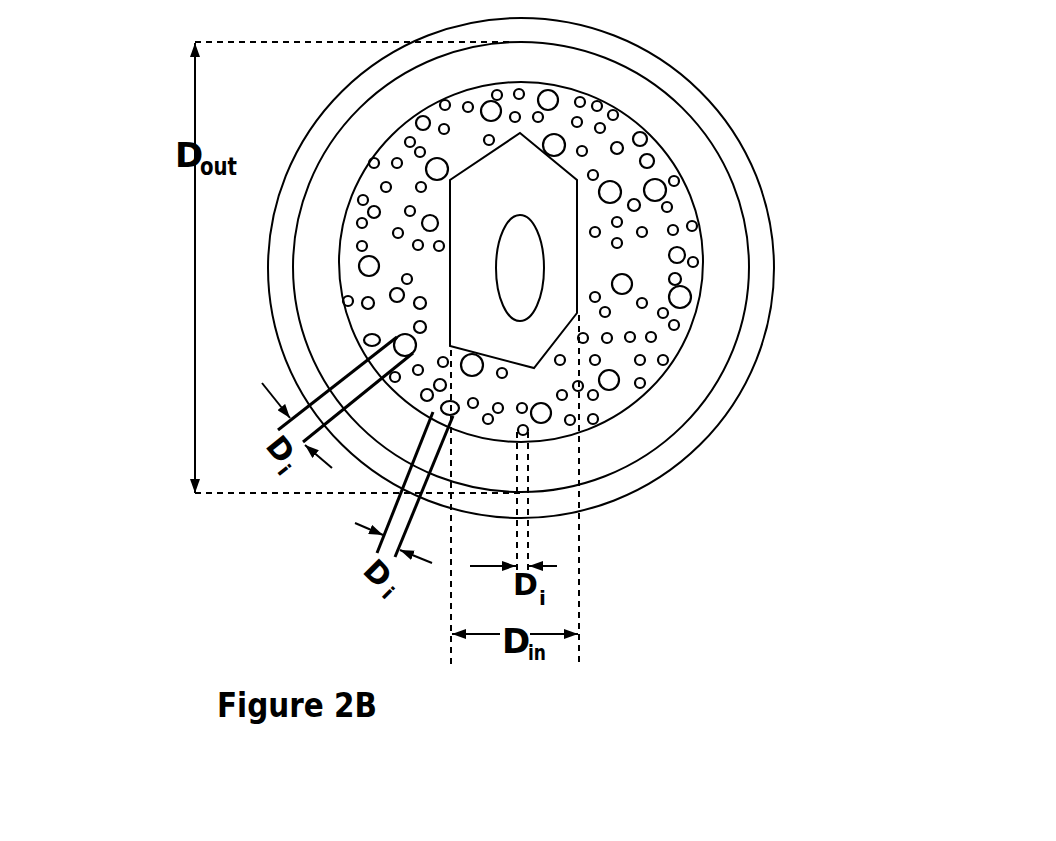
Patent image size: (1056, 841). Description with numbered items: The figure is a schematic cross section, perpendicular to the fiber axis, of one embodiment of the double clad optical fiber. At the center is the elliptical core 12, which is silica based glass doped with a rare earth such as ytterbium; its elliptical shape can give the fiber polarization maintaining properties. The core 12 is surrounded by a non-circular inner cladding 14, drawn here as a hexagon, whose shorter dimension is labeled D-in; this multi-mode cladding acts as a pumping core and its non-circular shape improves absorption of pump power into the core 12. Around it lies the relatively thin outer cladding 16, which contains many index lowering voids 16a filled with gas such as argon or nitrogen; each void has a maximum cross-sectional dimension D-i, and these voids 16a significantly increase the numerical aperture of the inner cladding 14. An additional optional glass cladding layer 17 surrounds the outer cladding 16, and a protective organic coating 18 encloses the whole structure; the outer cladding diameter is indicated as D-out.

The core 12 is at (522, 265).
The inner cladding 14 is at (547, 320).
The outer cladding 16 is at (654, 370).
The index lowering voids 16a is at (650, 160).
The additional optional glass cladding layer 17 is at (652, 420).
The protective coating 18 is at (647, 467).